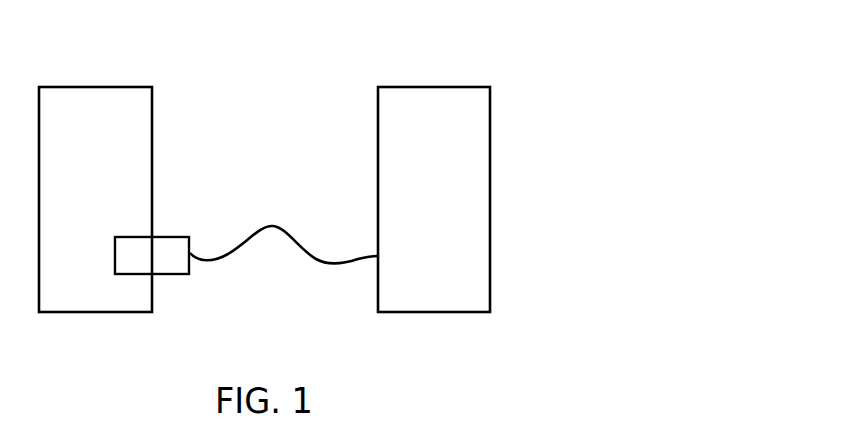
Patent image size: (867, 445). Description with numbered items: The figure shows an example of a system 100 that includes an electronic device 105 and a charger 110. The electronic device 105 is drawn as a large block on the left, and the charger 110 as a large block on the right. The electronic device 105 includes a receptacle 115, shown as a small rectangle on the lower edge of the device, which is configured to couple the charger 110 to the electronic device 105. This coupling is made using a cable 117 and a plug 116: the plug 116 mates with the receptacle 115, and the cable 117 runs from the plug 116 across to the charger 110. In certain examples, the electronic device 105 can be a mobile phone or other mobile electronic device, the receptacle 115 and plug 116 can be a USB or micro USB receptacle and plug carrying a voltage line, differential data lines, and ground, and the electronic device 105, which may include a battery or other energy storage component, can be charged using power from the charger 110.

The system 100 is at (654, 75).
The electronic device 105 is at (113, 86).
The charger 110 is at (450, 86).
The receptacle 115 is at (133, 276).
The plug 116 is at (170, 236).
The cable 117 is at (340, 266).